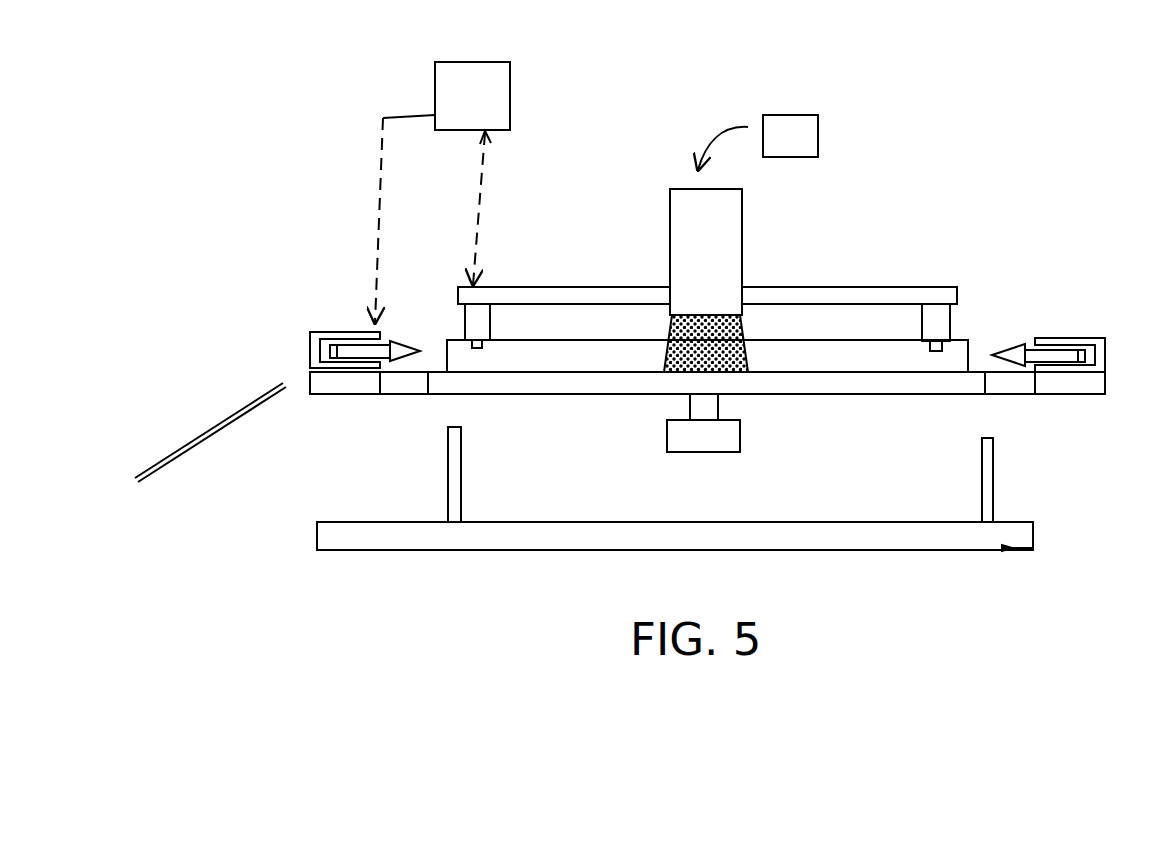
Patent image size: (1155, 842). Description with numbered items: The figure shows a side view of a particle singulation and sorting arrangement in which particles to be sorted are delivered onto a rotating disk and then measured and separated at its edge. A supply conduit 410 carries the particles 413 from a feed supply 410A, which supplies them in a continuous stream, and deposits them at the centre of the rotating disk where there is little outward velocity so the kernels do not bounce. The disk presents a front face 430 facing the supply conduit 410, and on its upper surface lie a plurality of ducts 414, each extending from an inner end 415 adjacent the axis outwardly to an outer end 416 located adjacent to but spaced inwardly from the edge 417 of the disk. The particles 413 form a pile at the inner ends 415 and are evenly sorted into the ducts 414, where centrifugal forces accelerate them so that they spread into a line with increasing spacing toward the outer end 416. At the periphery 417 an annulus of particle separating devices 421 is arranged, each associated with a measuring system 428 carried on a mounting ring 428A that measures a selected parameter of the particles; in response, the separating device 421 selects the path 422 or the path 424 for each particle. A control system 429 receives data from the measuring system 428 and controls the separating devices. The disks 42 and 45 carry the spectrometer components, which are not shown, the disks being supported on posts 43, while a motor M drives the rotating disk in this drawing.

The disk 42 is at (873, 538).
The support posts 43 is at (447, 500).
The disk 45 is at (575, 383).
The supply conduit 410 is at (742, 205).
The feed supply 410A is at (798, 120).
The particles 413 is at (760, 290).
The ducts 414 is at (853, 358).
The inner ends 415 is at (747, 360).
The outer end 416 is at (963, 357).
The edge 417 is at (1090, 390).
The particle separating device 421 is at (1018, 313).
The path 422 is at (420, 363).
The path 424 is at (415, 326).
The measuring system 428 is at (482, 322).
The mounting ring 428A is at (935, 232).
The control system 429 is at (435, 100).
The front face 430 is at (513, 360).
The motor M is at (693, 432).